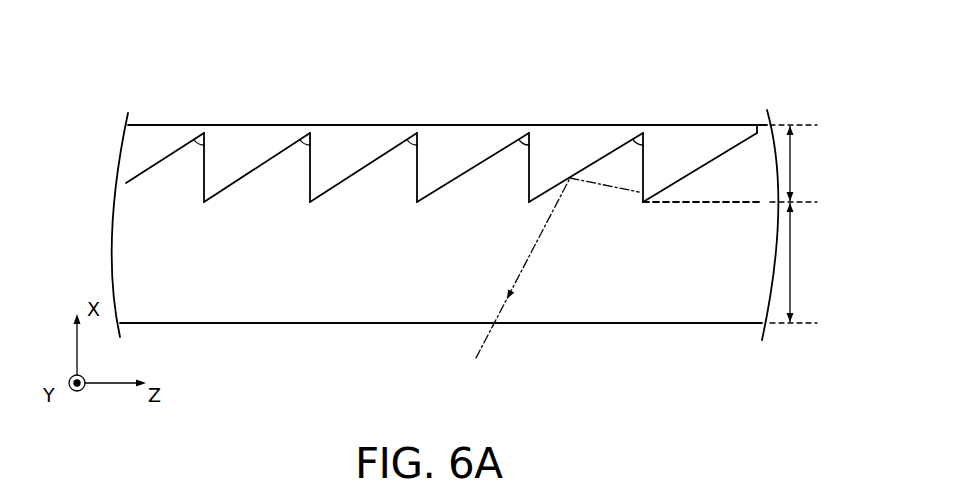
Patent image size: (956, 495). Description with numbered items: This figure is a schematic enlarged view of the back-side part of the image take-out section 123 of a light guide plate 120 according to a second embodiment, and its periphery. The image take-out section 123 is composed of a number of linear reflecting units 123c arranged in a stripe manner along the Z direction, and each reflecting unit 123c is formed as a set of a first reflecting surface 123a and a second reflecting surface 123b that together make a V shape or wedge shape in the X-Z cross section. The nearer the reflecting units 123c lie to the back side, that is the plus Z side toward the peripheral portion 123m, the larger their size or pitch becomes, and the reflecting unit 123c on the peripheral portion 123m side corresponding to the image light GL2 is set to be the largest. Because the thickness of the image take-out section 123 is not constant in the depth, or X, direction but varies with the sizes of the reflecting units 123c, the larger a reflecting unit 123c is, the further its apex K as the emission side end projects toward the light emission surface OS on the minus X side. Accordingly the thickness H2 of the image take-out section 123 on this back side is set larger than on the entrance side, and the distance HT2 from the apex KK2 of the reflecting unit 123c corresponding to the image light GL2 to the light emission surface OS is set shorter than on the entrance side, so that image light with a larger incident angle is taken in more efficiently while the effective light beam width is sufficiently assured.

The light guide plate 120 is at (284, 74).
The image take-out section 123 is at (444, 198).
The first reflecting surface 123a is at (641, 190).
The second reflecting surface 123b is at (146, 168).
The reflecting unit 123c is at (160, 236).
The peripheral portion 123m is at (583, 312).
The apex K is at (207, 204).
The apex KK2 is at (640, 197).
The image light GL2 is at (519, 279).
The light emission surface OS is at (382, 325).
The thickness H2 is at (795, 163).
The distance HT2 is at (801, 263).